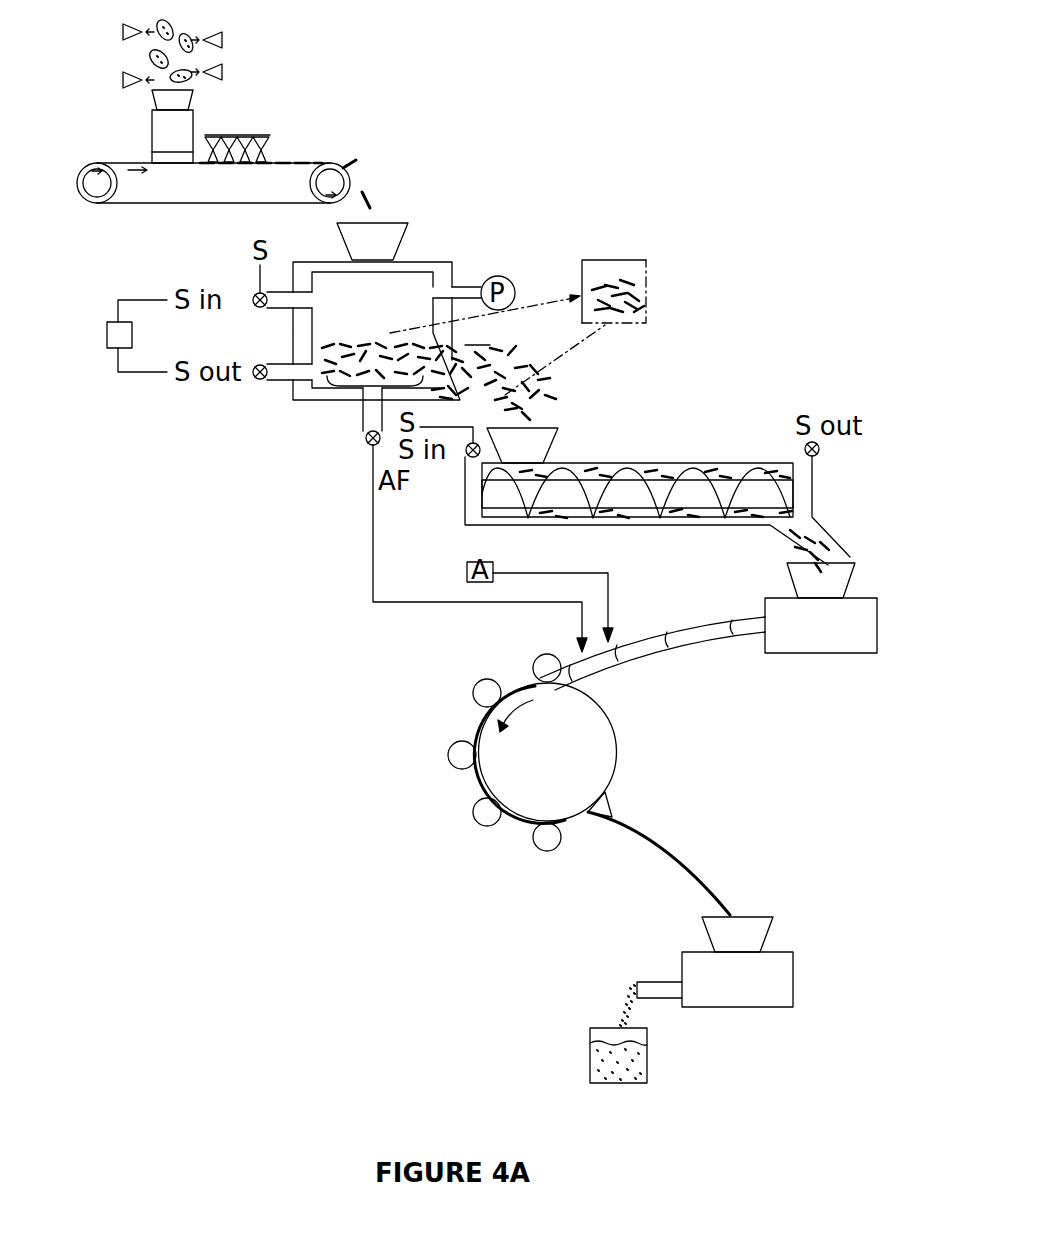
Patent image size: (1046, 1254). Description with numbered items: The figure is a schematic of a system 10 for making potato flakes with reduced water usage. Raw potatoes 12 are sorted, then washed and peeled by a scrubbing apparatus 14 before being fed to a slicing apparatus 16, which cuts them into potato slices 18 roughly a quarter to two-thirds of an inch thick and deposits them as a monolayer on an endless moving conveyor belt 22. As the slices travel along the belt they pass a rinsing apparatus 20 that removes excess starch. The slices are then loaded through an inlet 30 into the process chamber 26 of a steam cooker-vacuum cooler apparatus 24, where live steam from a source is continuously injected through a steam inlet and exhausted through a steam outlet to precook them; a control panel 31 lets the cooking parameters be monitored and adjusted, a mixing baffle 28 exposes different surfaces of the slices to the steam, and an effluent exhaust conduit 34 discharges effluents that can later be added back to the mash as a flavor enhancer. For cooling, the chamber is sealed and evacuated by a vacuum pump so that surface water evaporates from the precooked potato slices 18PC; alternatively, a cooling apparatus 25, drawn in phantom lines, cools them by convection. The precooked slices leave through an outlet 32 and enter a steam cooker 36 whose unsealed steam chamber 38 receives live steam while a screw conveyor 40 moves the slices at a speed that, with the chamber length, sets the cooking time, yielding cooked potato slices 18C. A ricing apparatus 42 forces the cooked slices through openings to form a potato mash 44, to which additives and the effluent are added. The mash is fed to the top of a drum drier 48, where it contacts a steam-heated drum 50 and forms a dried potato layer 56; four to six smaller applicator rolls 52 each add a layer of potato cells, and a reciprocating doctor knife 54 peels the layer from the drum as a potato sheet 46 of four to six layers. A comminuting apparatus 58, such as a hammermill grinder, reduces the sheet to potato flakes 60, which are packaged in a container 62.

The system 10 is at (661, 210).
The potatoes 12 is at (171, 23).
The scrubbing apparatus 14 is at (215, 72).
The slicing apparatus 16 is at (158, 138).
The potato slices 18 is at (198, 162).
The precooked potato slices 18PC is at (646, 306).
The cooked potato slices 18C is at (824, 560).
The rinsing apparatus 20 is at (244, 135).
The conveyor belt 22 is at (305, 161).
The steam cooker-vacuum cooler apparatus 24 is at (452, 263).
The cooling apparatus 25 is at (646, 275).
The process chamber 26 is at (392, 314).
The mixing baffle 28 is at (346, 383).
The inlet 30 is at (400, 222).
The control panel 31 is at (108, 335).
The outlet 32 is at (465, 346).
The effluent exhaust conduit 34 is at (362, 422).
The steam cooker 36 is at (733, 463).
The steam chamber 38 is at (640, 518).
The screw conveyor 40 is at (590, 512).
The ricing apparatus 42 is at (811, 646).
The potato mash 44 is at (625, 646).
The potato sheet 46 is at (670, 860).
The drum drier 48 is at (600, 707).
The drum 50 is at (602, 754).
The applicator rolls 52 is at (559, 820).
The doctor knife 54 is at (612, 803).
The dried potato layer 56 is at (480, 782).
The comminuting apparatus 58 is at (773, 953).
The potato flakes 60 is at (619, 1016).
The container 62 is at (588, 1070).